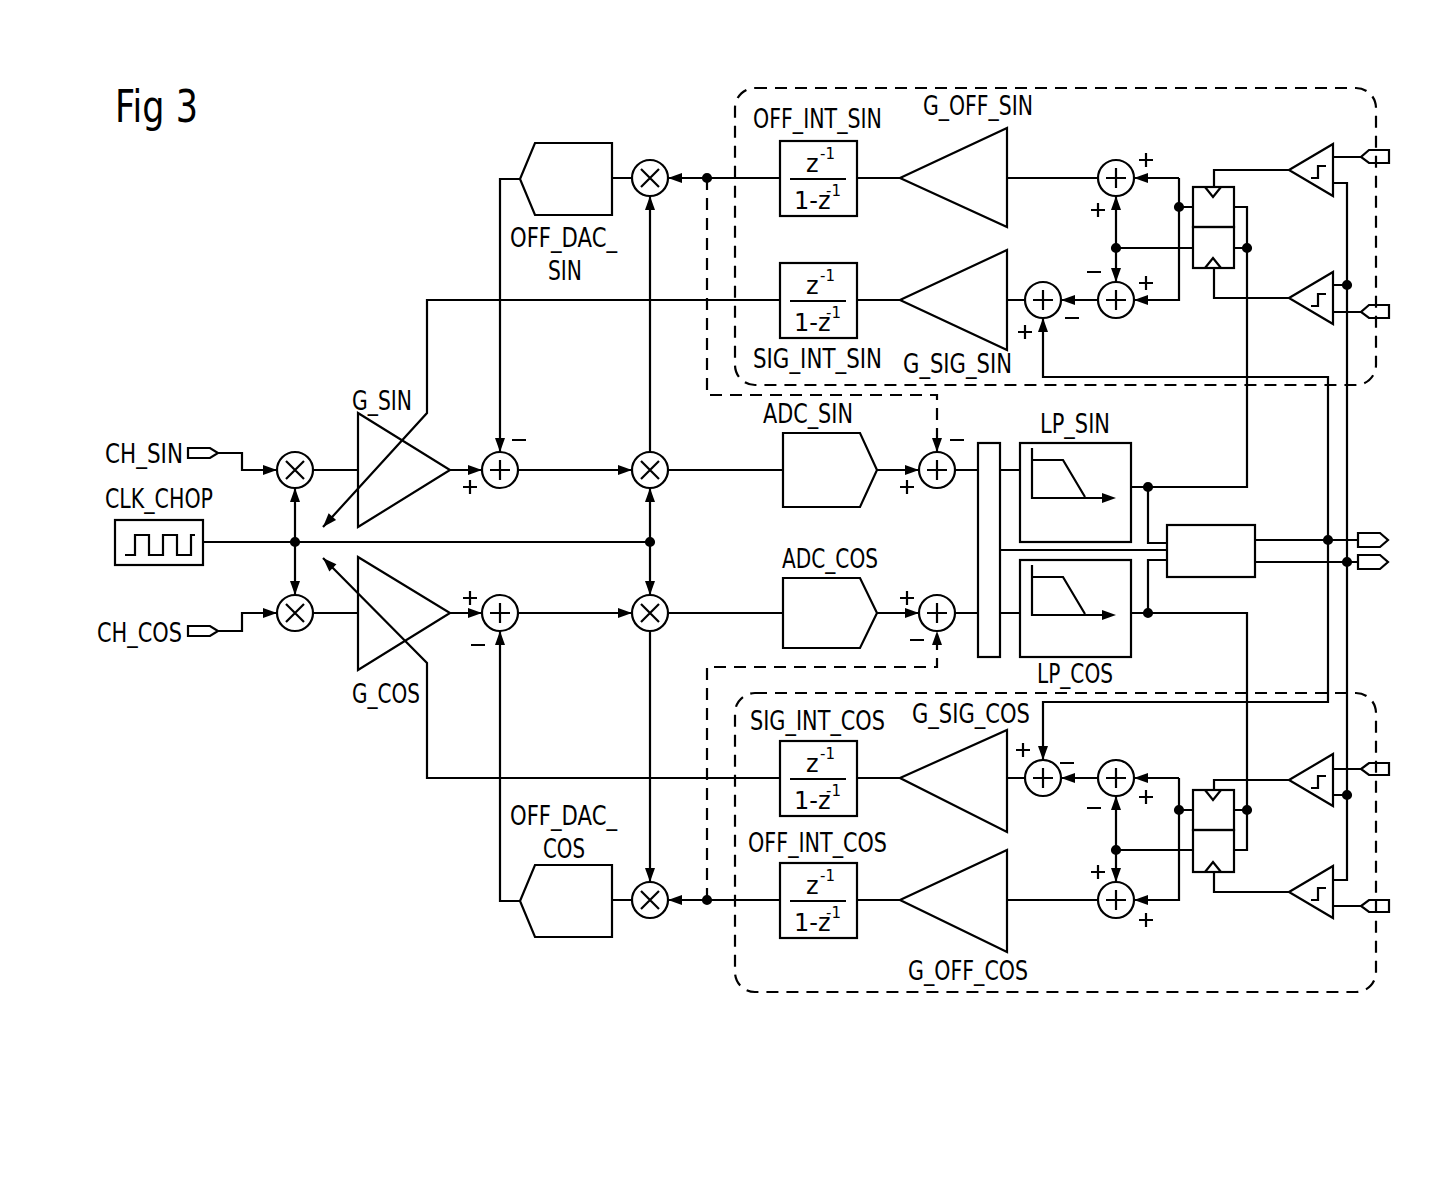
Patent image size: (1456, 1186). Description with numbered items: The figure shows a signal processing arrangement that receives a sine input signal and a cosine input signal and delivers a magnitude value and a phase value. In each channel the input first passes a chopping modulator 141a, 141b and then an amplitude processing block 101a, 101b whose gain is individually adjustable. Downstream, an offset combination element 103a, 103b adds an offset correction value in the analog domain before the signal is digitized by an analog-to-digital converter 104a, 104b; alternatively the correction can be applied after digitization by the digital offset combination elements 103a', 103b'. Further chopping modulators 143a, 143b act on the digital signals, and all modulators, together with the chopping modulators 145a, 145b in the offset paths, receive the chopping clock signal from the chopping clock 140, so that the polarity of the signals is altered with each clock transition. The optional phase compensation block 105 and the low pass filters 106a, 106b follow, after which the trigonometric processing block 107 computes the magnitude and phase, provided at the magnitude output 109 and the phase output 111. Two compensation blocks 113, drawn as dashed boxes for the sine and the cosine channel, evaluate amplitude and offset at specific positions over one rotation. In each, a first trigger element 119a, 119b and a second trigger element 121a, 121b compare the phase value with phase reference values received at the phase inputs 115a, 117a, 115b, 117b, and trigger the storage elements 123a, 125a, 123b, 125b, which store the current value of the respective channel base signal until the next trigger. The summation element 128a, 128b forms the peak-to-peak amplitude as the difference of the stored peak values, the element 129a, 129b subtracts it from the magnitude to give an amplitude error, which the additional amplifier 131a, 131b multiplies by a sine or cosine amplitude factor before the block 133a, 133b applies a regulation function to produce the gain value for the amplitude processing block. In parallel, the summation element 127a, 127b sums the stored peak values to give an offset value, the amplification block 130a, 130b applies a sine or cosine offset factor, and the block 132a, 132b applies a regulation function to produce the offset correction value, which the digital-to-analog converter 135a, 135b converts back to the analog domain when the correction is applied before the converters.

The first amplitude processing block 101a is at (458, 437).
The second amplitude processing block 101b is at (358, 653).
The first offset combination element 103a is at (525, 493).
The second offset combination element 103b is at (525, 636).
The digital offset combination element 103a' is at (911, 449).
The digital offset combination element 103b' is at (921, 586).
The analog-to-digital converter 104a is at (783, 492).
The analog-to-digital converter 104b is at (783, 590).
The phase compensation block 105 is at (990, 442).
The low pass filter 106a is at (1131, 468).
The low pass filter 106b is at (1131, 633).
The trigonometric processing block 107 is at (1257, 528).
The magnitude output 109 is at (1368, 530).
The phase output 111 is at (1370, 572).
The compensation block 113 is at (1378, 262).
The 90 degree reference input 115a is at (1383, 163).
The phase input 117a is at (1383, 318).
The 0 degree reference input 115b is at (1383, 762).
The phase input 117b is at (1383, 900).
The first trigger element 119a is at (1309, 152).
The second trigger element 121a is at (1309, 280).
The first trigger element 119b is at (1309, 762).
The second trigger element 121b is at (1309, 907).
The first storage element 123a is at (1211, 185).
The second storage element 125a is at (1203, 270).
The first storage element 123b is at (1203, 790).
The second storage element 125b is at (1203, 872).
The summation element 127a is at (1119, 160).
The summation element 128a is at (1123, 320).
The subtraction element 129a is at (1047, 320).
The summation element 127b is at (1118, 920).
The summation element 128b is at (1141, 738).
The subtraction element 129b is at (1053, 760).
The amplification block 130a is at (1008, 152).
The additional amplifier 131a is at (1008, 270).
The amplification block 130b is at (1008, 927).
The additional amplifier 131b is at (1008, 818).
The offset regulation block 132a is at (858, 162).
The amplitude regulation block 133a is at (858, 283).
The offset regulation block 132b is at (858, 912).
The amplitude regulation block 133b is at (858, 790).
The digital-to-analog converter 135a is at (523, 167).
The digital-to-analog converter 135b is at (523, 917).
The chopping clock 140 is at (203, 533).
The chopping modulator 141a is at (295, 452).
The chopping modulator 141b is at (282, 597).
The chopping modulator 143a is at (637, 452).
The chopping modulator 143b is at (637, 595).
The chopping modulator 145a is at (650, 158).
The chopping modulator 145b is at (650, 920).